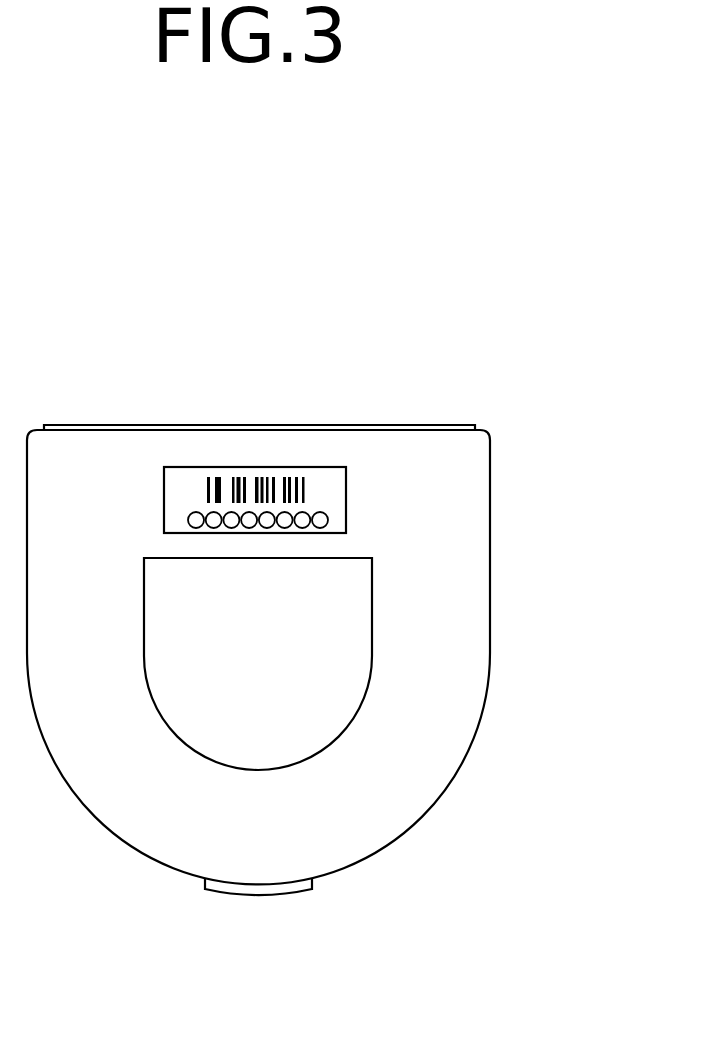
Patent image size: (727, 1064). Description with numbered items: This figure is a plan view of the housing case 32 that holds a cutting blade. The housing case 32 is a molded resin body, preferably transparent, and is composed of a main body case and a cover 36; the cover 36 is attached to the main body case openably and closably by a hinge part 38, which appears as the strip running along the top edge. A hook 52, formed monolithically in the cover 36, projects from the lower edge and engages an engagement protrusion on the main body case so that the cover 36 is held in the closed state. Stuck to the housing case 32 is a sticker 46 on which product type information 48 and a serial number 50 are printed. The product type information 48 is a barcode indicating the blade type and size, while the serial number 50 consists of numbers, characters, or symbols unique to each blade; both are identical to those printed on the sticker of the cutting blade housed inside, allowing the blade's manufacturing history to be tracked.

The housing case 32 is at (369, 407).
The cover 36 is at (481, 683).
The hinge part 38 is at (98, 425).
The sticker 46 is at (165, 508).
The product type information 48 is at (247, 478).
The serial number 50 is at (328, 520).
The hook 52 is at (253, 893).